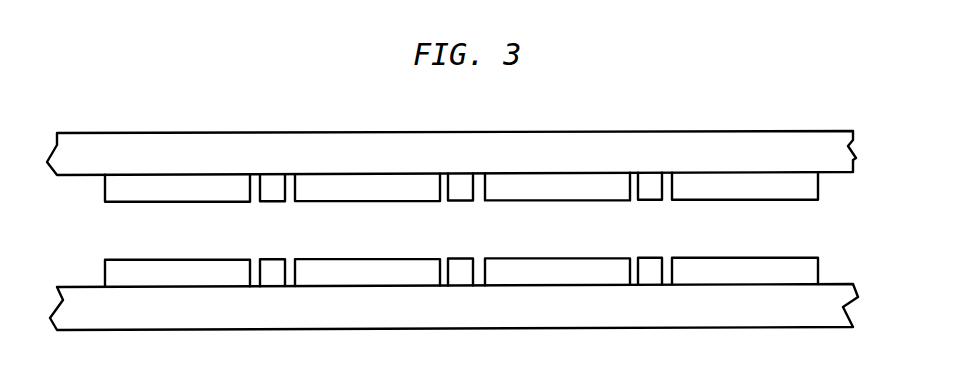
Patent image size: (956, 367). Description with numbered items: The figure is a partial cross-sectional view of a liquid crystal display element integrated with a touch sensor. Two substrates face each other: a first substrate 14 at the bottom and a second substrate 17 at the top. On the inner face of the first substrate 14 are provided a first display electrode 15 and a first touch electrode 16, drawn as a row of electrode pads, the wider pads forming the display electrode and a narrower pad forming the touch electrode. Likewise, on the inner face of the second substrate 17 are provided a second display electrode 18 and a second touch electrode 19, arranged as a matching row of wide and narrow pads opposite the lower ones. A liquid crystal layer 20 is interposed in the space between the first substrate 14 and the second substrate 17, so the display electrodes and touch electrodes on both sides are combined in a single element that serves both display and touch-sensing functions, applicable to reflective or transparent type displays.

The first substrate 14 is at (842, 302).
The first display electrode 15 is at (813, 270).
The first touch electrode 16 is at (657, 262).
The second substrate 17 is at (842, 145).
The second display electrode 18 is at (812, 183).
The second touch electrode 19 is at (648, 203).
The liquid crystal layer 20 is at (113, 233).